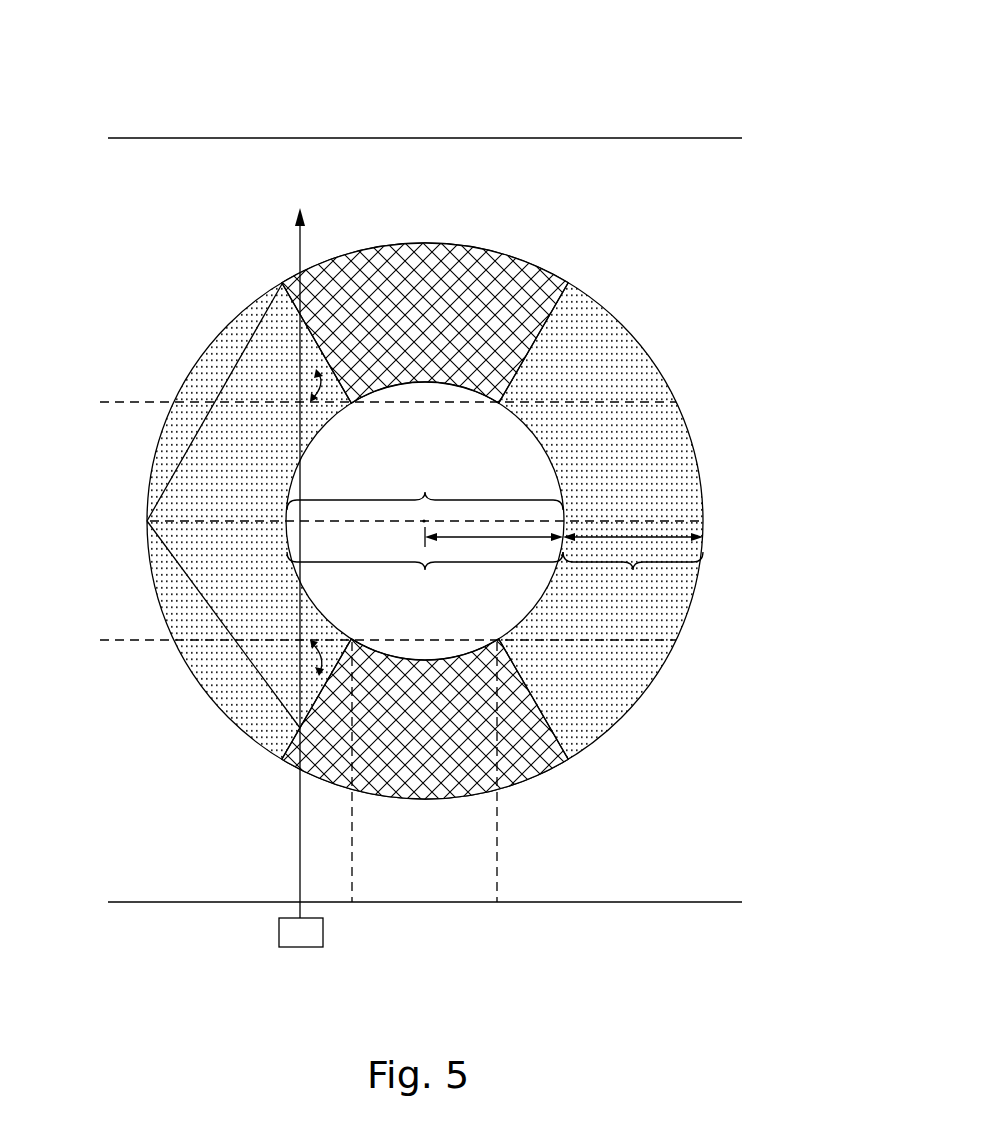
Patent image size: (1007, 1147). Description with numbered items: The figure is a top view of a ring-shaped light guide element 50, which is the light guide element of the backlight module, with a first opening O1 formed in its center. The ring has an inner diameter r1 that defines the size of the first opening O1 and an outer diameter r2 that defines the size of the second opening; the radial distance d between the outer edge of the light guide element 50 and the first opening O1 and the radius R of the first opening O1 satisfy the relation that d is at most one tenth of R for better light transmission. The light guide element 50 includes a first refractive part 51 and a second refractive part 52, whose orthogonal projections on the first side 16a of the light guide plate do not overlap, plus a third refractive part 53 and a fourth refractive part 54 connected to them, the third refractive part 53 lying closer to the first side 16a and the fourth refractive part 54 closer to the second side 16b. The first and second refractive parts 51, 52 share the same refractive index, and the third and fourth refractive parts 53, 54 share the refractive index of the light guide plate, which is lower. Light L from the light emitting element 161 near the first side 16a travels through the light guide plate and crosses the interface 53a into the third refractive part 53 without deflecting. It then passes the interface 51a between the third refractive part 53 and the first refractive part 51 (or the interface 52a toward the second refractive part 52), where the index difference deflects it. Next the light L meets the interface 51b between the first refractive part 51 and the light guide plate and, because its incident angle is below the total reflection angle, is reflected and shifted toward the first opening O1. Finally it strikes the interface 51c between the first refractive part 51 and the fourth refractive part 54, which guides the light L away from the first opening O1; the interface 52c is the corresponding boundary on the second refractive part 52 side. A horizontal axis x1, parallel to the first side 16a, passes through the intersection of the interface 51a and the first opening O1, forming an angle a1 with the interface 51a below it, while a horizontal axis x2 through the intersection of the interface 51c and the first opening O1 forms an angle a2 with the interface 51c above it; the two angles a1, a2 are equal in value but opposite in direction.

The light guide element 50 is at (78, 49).
The first refractive part 51 is at (266, 598).
The second refractive part 52 is at (611, 598).
The third refractive part 53 is at (438, 738).
The fourth refractive part 54 is at (438, 326).
The first opening O1 is at (560, 461).
The first side 16a is at (725, 908).
The second side 16b is at (725, 135).
The light L is at (298, 849).
The light emitting element 161 is at (298, 940).
The interface 51a is at (285, 747).
The interface 51b is at (150, 476).
The interface 51c is at (357, 322).
The interface 52a is at (560, 742).
The interface 52c is at (557, 312).
The interface 53a is at (413, 799).
The horizontal axis x1 is at (118, 638).
The horizontal axis x2 is at (118, 400).
The angle a1 is at (303, 660).
The angle a2 is at (302, 381).
The inner diameter r1 is at (425, 490).
The outer diameter r2 is at (425, 578).
The radius of the first opening R is at (494, 544).
The distance between outer edge and first opening d is at (633, 551).